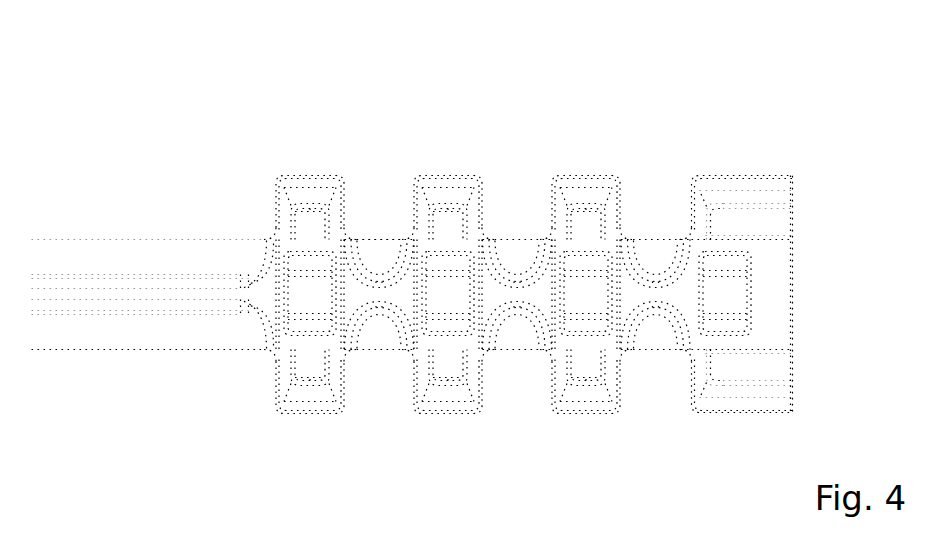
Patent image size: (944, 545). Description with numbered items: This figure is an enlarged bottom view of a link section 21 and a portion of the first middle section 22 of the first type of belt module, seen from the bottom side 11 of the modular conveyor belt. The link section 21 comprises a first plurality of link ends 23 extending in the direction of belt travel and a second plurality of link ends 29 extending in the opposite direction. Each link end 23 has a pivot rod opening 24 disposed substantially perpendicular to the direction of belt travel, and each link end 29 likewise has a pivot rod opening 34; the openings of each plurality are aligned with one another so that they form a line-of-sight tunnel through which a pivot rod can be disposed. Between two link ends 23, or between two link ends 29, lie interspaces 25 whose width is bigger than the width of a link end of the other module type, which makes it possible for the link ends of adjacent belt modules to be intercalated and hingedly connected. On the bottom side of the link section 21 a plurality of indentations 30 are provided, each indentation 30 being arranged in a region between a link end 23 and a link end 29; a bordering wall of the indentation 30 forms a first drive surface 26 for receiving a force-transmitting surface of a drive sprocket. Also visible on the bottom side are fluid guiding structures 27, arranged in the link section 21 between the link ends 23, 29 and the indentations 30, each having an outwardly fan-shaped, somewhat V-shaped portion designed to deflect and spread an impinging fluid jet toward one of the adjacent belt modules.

The bottom side 11 is at (218, 125).
The link section 21 is at (567, 108).
The first middle section 22 is at (140, 236).
The link end 23 is at (444, 180).
The pivot rod opening 24 is at (617, 220).
The interspace 25 is at (386, 208).
The first drive surface 26 is at (450, 262).
The fluid guiding structure 27 is at (380, 255).
The link end 29 is at (430, 390).
The indentation 30 is at (441, 308).
The pivot rod opening 34 is at (620, 375).